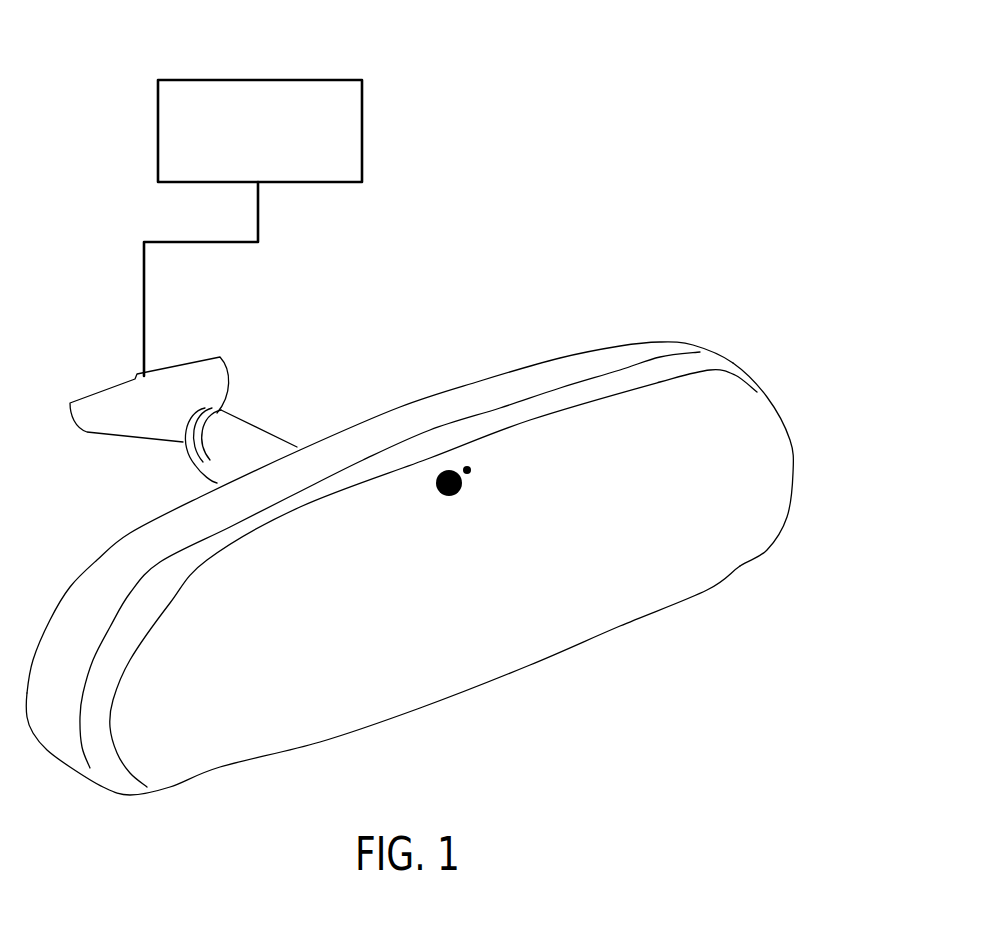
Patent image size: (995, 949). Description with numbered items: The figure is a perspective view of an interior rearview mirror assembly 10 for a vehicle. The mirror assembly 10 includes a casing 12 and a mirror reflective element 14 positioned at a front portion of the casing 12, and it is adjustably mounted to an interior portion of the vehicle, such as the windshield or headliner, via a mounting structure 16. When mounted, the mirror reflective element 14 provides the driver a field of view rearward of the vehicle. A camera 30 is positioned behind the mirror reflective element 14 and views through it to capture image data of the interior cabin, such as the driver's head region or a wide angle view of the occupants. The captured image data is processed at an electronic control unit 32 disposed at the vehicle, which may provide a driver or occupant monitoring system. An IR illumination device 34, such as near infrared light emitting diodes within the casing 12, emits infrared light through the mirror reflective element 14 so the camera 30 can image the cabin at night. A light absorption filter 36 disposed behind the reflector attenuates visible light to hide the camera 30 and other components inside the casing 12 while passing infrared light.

The interior rearview mirror assembly 10 is at (409, 502).
The casing 12 is at (440, 406).
The mirror reflective element 14 is at (647, 603).
The mounting structure 16 is at (263, 355).
The camera 30 is at (449, 496).
The electronic control unit (ECU) 32 is at (172, 79).
The IR illumination device 34 is at (471, 469).
The light absorption filter 36 is at (732, 567).